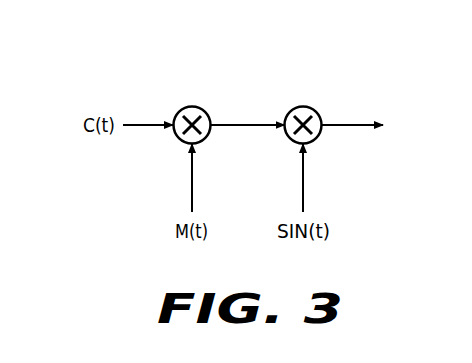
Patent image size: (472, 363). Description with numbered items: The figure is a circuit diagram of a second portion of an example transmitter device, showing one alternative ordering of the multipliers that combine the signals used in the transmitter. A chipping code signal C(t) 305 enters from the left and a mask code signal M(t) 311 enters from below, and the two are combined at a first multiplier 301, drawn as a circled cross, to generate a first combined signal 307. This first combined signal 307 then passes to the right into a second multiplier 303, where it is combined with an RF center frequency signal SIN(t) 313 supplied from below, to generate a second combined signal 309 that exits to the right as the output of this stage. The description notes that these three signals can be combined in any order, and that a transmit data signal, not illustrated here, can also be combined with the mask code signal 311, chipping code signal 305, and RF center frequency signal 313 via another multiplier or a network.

The first multiplier 301 is at (200, 107).
The second multiplier 303 is at (312, 108).
The chipping code signal C(t) 305 is at (145, 127).
The first combined signal 307 is at (251, 127).
The second combined signal 309 is at (351, 127).
The mask code signal M(t) 311 is at (191, 185).
The RF center frequency signal SIN(t) 313 is at (302, 185).